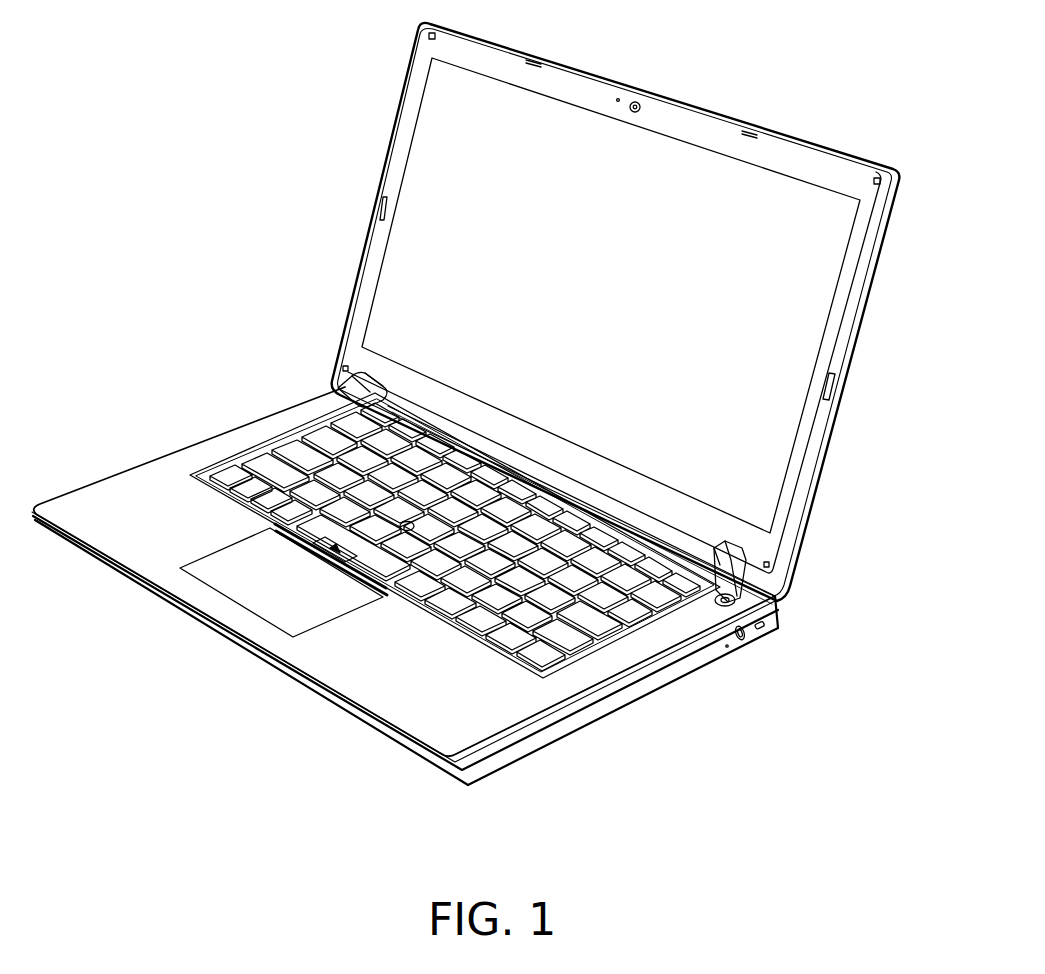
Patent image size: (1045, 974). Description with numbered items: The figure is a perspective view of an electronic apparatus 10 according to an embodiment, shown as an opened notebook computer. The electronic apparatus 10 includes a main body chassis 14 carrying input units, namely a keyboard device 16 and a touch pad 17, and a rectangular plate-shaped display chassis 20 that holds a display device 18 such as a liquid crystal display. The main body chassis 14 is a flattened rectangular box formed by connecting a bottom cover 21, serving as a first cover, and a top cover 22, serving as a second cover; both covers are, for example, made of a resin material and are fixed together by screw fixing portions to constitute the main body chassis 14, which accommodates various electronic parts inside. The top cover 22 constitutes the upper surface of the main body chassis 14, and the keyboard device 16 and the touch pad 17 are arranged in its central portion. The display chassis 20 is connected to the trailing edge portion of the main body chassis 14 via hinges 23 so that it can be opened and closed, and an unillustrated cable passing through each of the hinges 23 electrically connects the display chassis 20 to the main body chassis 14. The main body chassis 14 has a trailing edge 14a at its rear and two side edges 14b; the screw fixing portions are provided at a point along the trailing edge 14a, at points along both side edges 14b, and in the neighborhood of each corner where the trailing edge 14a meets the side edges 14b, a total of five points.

The electronic apparatus 10 is at (202, 95).
The main body chassis 14 is at (114, 535).
The trailing edge 14a is at (592, 520).
The side edges 14b is at (153, 455).
The keyboard device 16 is at (286, 456).
The touch pad 17 is at (217, 575).
The display device 18 is at (793, 347).
The display chassis 20 is at (873, 297).
The bottom cover 21 is at (627, 712).
The top cover 22 is at (595, 667).
The hinges 23 is at (360, 383).